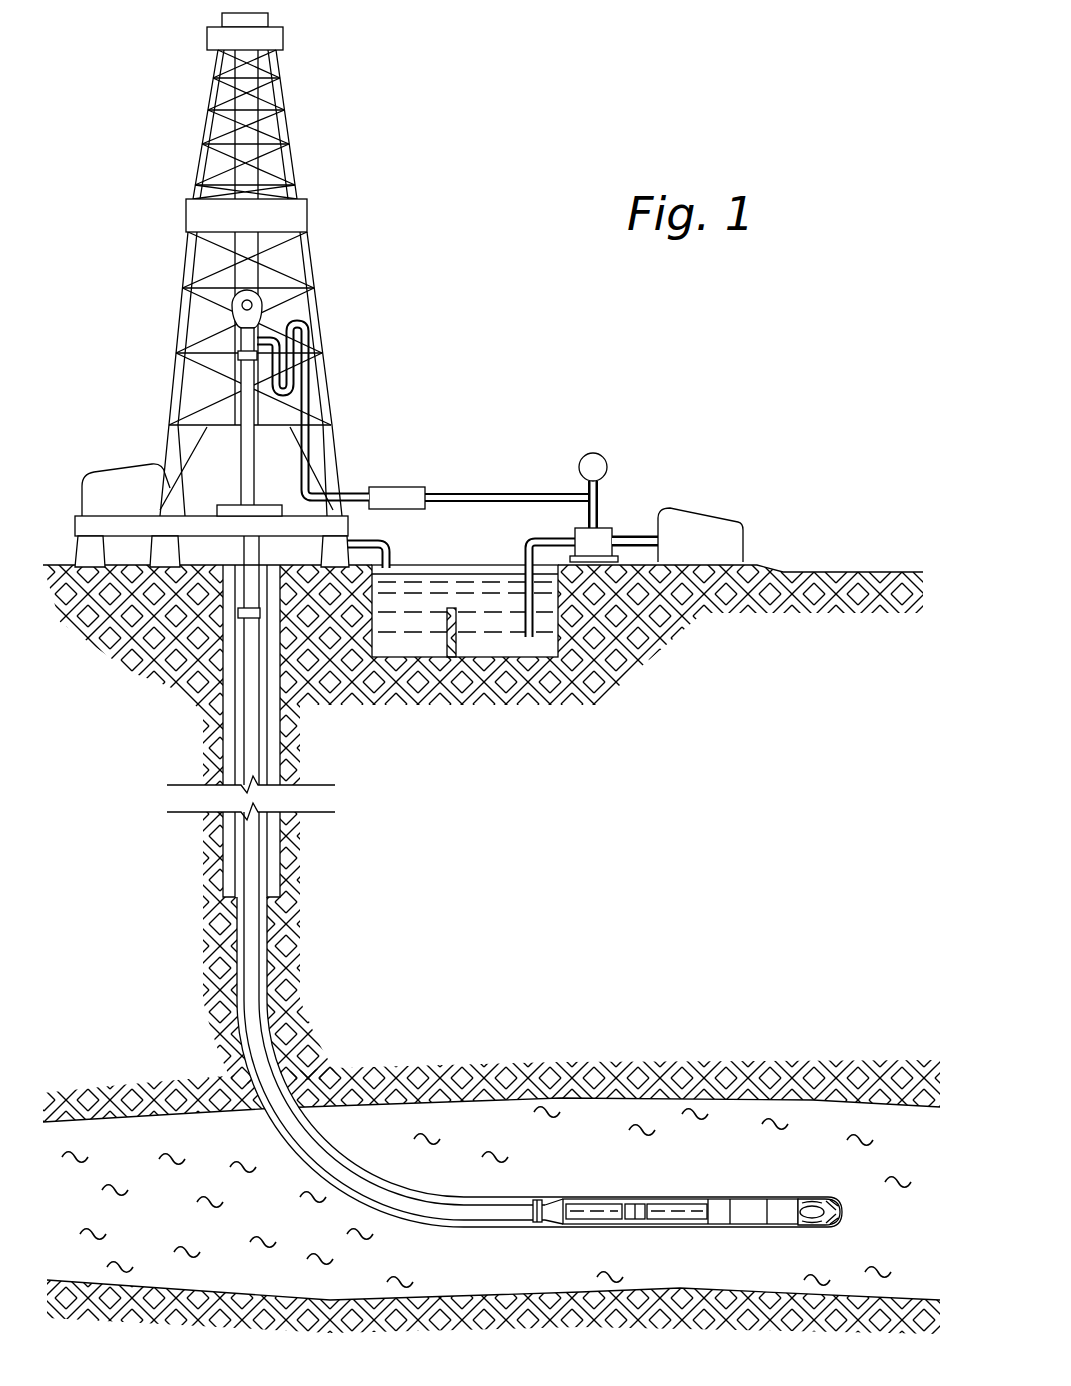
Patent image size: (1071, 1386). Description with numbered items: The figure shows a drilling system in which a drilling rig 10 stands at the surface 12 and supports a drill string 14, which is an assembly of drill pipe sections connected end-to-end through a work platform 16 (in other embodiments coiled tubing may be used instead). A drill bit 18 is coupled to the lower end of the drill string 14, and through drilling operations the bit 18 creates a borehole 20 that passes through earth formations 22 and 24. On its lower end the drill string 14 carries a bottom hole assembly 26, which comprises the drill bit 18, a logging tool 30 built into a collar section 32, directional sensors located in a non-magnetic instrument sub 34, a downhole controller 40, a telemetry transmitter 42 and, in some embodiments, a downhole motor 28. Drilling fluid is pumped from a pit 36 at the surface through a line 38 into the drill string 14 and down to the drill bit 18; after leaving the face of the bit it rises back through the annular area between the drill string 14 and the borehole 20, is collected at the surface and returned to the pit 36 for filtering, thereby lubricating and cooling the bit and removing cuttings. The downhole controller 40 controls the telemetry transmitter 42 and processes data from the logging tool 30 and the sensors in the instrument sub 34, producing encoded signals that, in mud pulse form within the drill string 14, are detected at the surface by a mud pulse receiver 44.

The drilling rig 10 is at (362, 207).
The surface 12 is at (808, 572).
The drill string 14 is at (257, 987).
The work platform 16 is at (227, 503).
The drill bit 18 is at (815, 1210).
The borehole 20 is at (268, 952).
The earth formation 22 is at (530, 777).
The earth formation 24 is at (176, 1213).
The bottom hole assembly 26 is at (685, 1205).
The downhole motor 28 is at (777, 1212).
The logging tool 30 is at (705, 1190).
The collar section 32 is at (675, 1212).
The non-magnetic instrument sub 34 is at (580, 1212).
The pit 36 is at (433, 583).
The line 38 is at (498, 492).
The downhole controller 40 is at (632, 1212).
The telemetry transmitter 42 is at (534, 1185).
The mud pulse receiver 44 is at (395, 485).